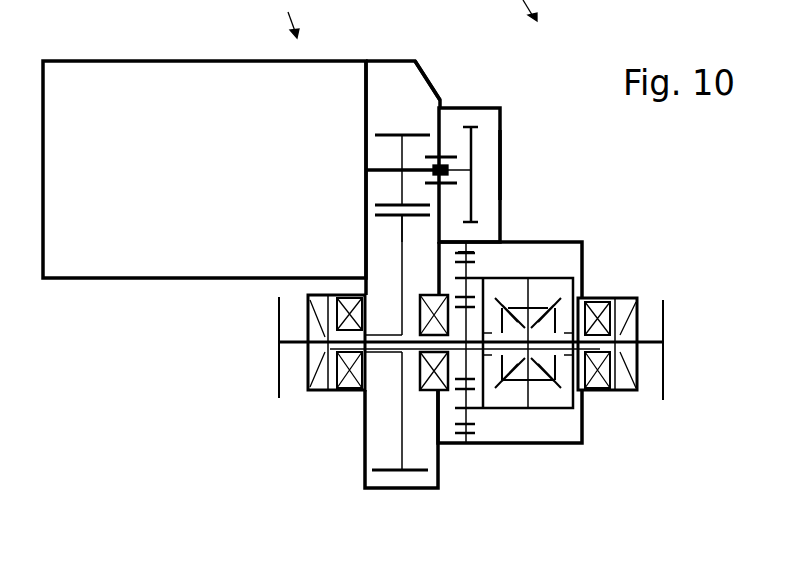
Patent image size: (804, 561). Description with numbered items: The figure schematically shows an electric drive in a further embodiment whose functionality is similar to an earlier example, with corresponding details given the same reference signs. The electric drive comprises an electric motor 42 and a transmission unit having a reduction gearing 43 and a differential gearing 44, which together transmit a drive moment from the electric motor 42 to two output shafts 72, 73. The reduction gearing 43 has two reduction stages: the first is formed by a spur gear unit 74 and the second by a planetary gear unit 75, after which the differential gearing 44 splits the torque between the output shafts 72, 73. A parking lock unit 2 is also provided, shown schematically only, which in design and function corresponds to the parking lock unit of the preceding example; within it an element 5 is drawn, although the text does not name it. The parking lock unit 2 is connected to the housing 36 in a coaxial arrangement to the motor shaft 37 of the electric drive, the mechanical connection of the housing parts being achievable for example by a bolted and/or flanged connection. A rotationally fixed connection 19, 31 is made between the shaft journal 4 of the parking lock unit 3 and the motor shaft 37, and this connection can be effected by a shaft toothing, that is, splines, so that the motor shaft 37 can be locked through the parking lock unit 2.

The electric motor 42 is at (192, 85).
The reduction gearing 43 is at (452, 457).
The housing 36 is at (423, 80).
The motor shaft 37 is at (383, 135).
The parking lock unit 2 is at (505, 137).
The parking lock unit 3 is at (502, 167).
The gear 5 is at (481, 135).
The shaft journal 4 is at (467, 158).
The rotationally fixed connection 19 is at (511, 169).
The rotationally fixed connection 31 is at (447, 172).
The spur gear unit 74 is at (420, 232).
The differential gearing 44 is at (558, 430).
The planetary gear unit 75 is at (487, 420).
The output shaft 73 is at (380, 348).
The output shaft 72 is at (595, 343).